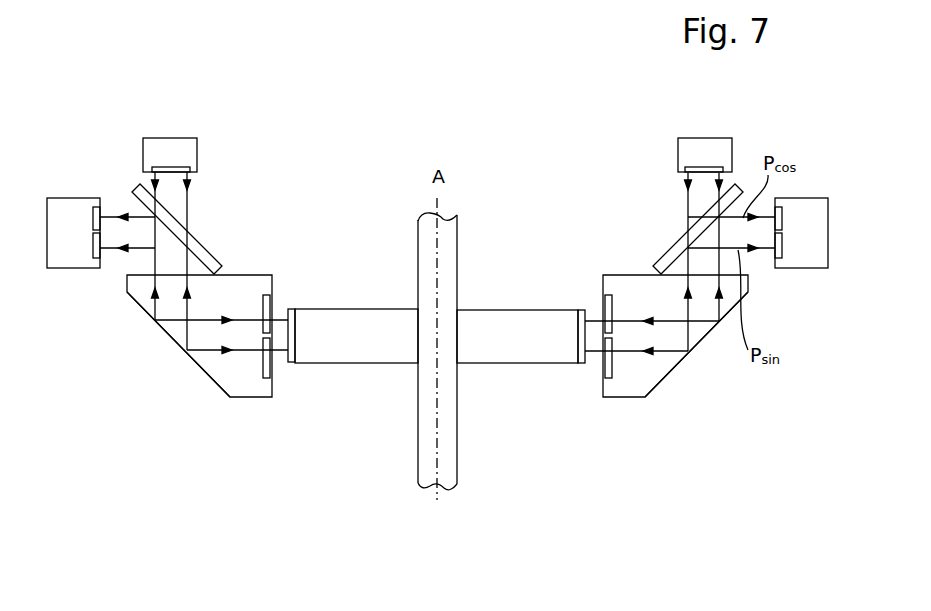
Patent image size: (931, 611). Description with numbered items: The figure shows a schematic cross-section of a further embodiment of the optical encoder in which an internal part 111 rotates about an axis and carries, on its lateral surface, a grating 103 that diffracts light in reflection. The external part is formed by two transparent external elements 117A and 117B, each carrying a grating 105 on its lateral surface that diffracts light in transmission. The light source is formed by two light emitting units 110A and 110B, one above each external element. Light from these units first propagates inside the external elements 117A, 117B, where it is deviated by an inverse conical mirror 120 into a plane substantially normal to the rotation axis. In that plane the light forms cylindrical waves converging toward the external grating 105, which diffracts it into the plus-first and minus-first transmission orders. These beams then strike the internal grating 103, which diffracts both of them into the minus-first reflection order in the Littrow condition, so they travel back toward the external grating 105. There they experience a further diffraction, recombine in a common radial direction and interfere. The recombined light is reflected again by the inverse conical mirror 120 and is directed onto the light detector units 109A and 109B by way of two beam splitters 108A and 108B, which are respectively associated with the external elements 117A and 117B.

The grating 103 is at (299, 336).
The grating 105 is at (276, 368).
The beam splitter 108A is at (665, 257).
The beam splitter 108B is at (205, 257).
The light detector unit 109A is at (810, 263).
The light detector unit 109B is at (65, 263).
The light emitting unit 110A is at (685, 152).
The light emitting unit 110B is at (190, 150).
The internal part 111 is at (523, 338).
The external element 117A is at (625, 392).
The external element 117B is at (250, 392).
The inverse conical mirror 120 is at (179, 344).